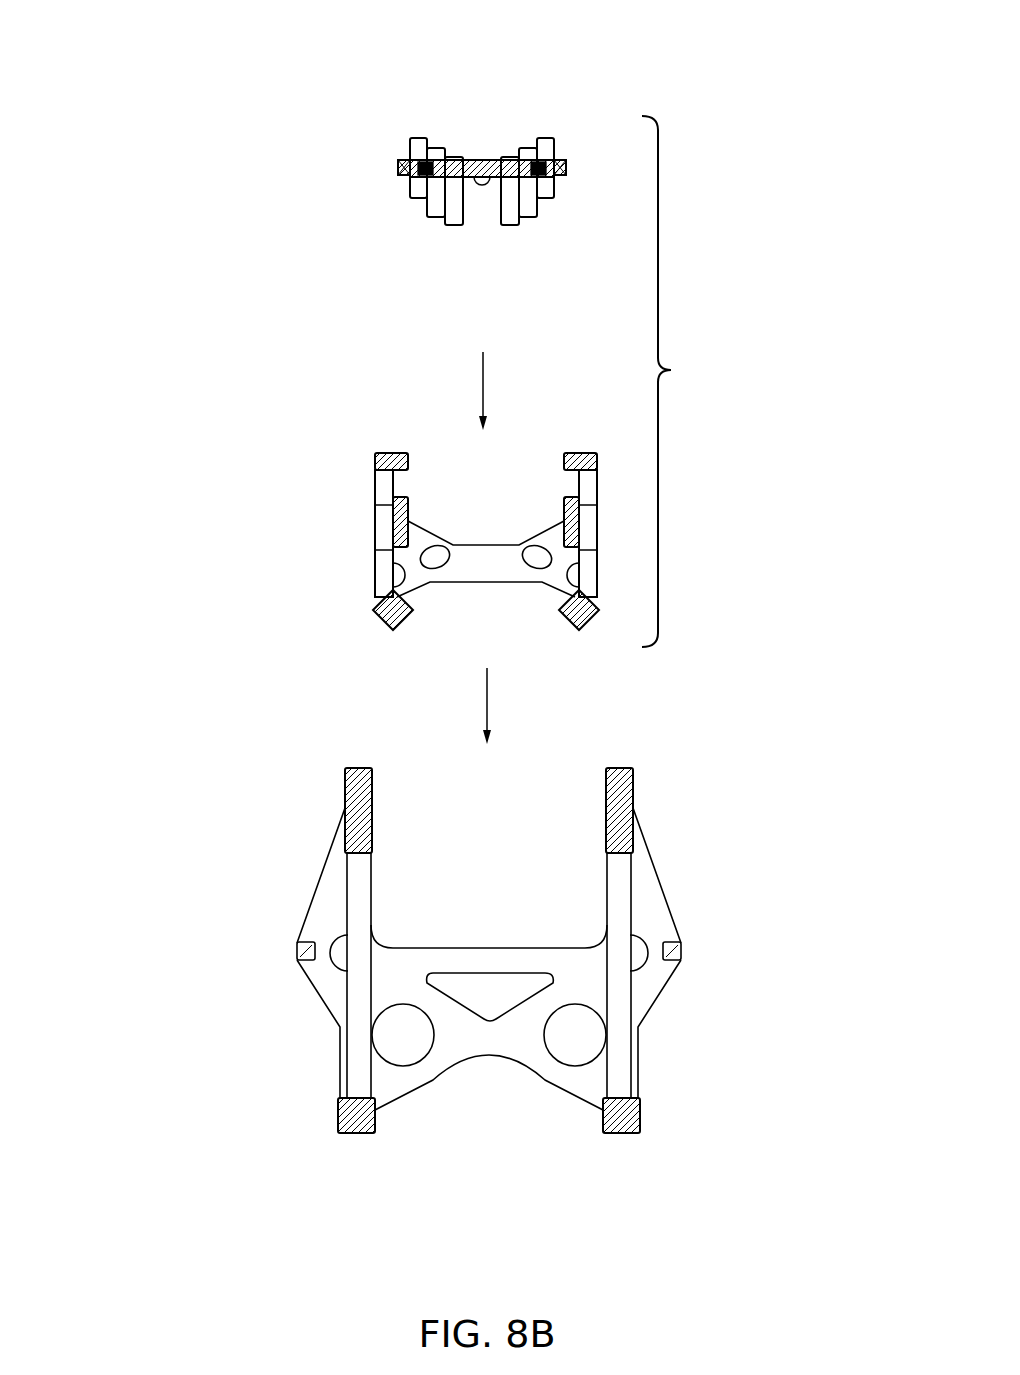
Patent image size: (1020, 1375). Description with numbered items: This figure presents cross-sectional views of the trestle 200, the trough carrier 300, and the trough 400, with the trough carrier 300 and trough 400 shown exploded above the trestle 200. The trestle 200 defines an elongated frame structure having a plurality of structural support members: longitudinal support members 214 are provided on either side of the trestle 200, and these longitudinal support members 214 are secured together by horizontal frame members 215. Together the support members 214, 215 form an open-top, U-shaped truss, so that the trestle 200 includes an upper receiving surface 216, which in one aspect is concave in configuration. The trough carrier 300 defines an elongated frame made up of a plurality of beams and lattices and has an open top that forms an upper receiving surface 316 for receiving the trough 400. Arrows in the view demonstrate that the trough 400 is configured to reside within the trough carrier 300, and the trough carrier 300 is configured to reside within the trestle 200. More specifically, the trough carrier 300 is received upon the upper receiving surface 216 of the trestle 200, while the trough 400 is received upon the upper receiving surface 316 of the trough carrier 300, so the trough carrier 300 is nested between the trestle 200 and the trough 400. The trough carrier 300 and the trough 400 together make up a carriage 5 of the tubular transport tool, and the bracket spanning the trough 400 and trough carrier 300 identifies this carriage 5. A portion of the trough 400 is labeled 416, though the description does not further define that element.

The carriage 5 is at (672, 381).
The trough 400 is at (354, 126).
The shaft 416 is at (512, 157).
The trough carrier 300 is at (295, 467).
The upper receiving surface 316 is at (506, 543).
The trestle 200 is at (285, 818).
The longitudinal support members 214 is at (623, 980).
The horizontal frame members 215 is at (552, 1083).
The upper receiving surface 216 is at (535, 947).